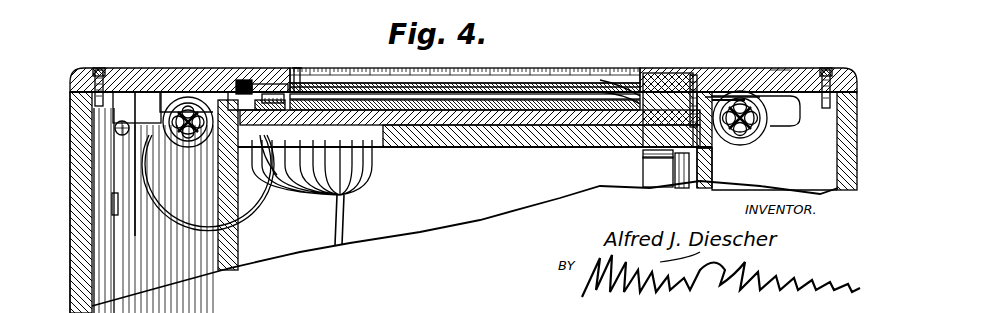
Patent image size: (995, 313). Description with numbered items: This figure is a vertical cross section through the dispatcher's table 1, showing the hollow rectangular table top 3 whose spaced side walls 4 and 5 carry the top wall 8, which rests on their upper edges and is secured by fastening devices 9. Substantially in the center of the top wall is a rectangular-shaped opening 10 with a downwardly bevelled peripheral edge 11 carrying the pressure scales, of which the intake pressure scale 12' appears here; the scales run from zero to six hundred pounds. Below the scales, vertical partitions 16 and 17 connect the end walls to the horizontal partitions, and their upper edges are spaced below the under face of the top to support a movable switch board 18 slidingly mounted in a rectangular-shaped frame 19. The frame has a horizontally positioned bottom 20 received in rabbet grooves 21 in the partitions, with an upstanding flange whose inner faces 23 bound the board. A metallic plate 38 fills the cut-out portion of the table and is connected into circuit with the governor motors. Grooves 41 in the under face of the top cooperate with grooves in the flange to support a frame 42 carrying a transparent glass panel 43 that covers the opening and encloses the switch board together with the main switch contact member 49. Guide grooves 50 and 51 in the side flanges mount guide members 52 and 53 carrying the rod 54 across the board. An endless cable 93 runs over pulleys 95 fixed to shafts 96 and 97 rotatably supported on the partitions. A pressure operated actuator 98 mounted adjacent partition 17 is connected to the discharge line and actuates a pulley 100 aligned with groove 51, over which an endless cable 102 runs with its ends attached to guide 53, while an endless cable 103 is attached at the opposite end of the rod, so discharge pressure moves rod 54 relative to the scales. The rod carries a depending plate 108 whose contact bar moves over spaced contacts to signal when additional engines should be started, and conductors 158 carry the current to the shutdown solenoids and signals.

The table 1 is at (76, 88).
The table top 3 is at (72, 261).
The side wall 4 is at (80, 180).
The side wall 5 is at (859, 96).
The top wall 8 is at (764, 70).
The fastening devices 9 is at (100, 69).
The rectangular-shaped opening 10 is at (300, 82).
The downwardly bevelled peripheral edge 11 is at (607, 82).
The intake pressure scale 12' is at (465, 58).
The vertical partition 16 is at (234, 268).
The vertical partition 17 is at (720, 182).
The movable switch board 18 is at (513, 128).
The rectangular-shaped frame 19 is at (662, 90).
The bottom 20 is at (472, 142).
The rabbet grooves 21 is at (221, 168).
The inner faces 23 is at (276, 178).
The metallic plate 38 is at (533, 106).
The grooves 41 is at (297, 75).
The frame 42 is at (262, 96).
The glass panel 43 is at (494, 86).
The main switch contact member 49 is at (471, 92).
The guide groove 50 is at (238, 88).
The guide groove 51 is at (740, 90).
The guide member 52 is at (226, 96).
The guide member 53 is at (714, 80).
The rod 54 is at (448, 96).
The endless cable 93 is at (586, 150).
The pulley 95 is at (178, 100).
The shaft 96 is at (166, 108).
The shaft 97 is at (763, 121).
The pressure operated actuator 98 is at (660, 183).
The pulley 100 is at (713, 165).
The endless cable 102 is at (700, 88).
The endless cable 103 is at (241, 88).
The depending plate 108 is at (264, 92).
The conductors 158 is at (372, 183).